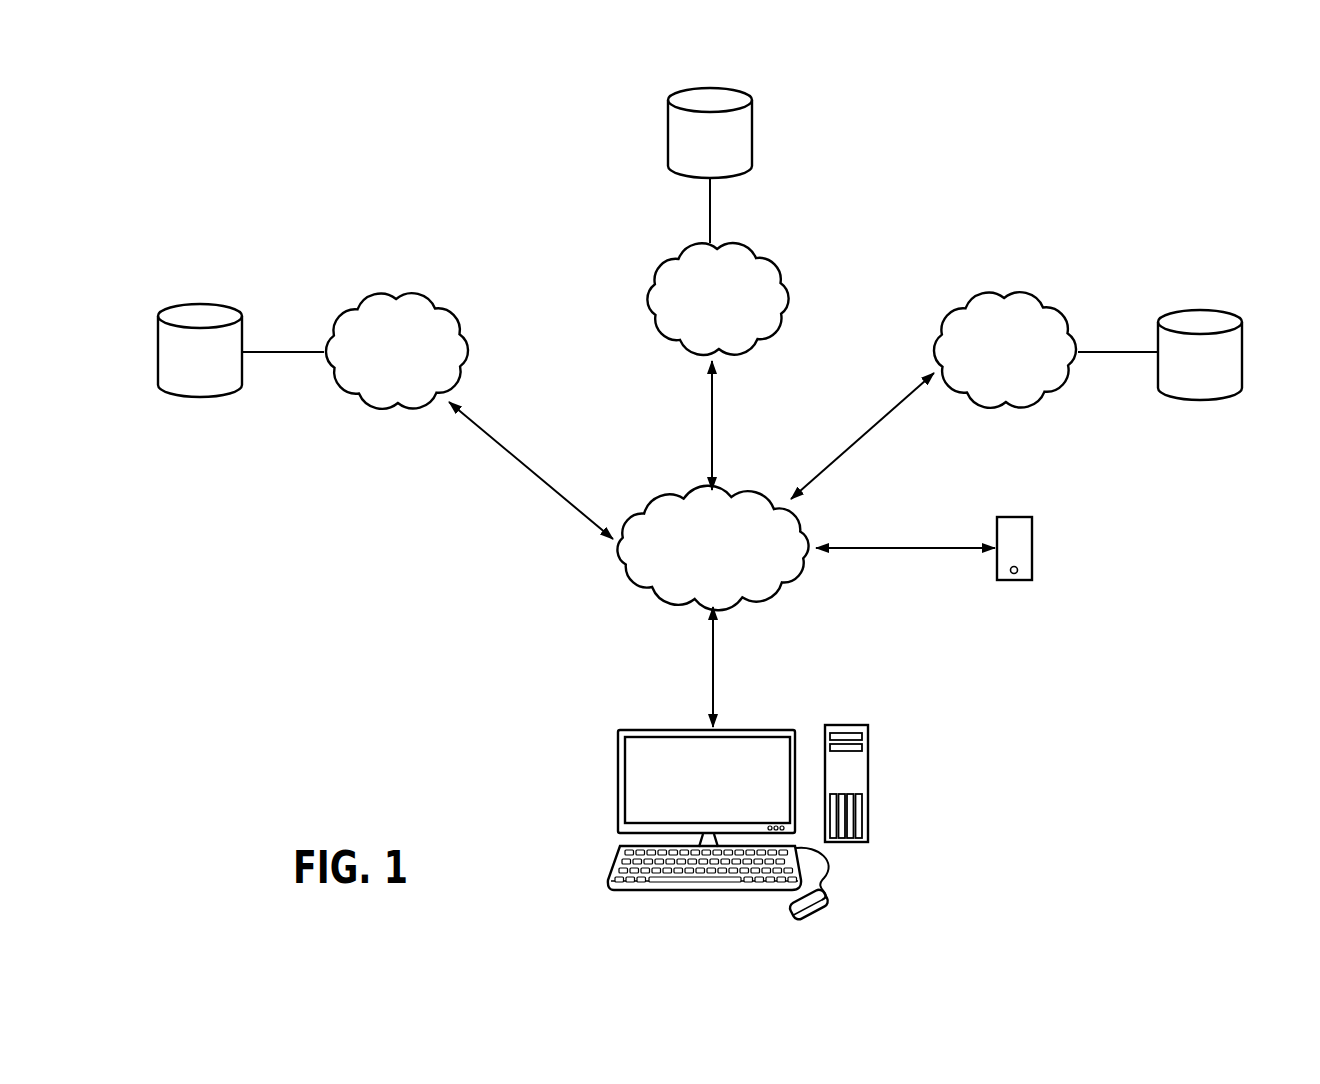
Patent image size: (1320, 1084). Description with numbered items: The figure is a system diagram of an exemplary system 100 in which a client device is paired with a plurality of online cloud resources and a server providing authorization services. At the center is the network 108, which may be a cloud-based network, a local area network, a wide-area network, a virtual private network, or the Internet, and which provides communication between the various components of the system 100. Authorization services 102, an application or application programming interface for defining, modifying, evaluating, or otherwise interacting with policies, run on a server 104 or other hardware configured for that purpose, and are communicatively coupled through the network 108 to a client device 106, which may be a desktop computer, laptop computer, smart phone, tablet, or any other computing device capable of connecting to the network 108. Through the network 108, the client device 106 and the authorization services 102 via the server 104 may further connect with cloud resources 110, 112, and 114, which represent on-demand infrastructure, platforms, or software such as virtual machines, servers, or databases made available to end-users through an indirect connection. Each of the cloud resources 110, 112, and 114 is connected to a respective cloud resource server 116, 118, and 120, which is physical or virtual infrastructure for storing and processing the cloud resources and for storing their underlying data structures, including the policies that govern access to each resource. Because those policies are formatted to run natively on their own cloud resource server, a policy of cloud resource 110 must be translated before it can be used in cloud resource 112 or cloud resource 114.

The system 100 is at (1114, 164).
The authorization services 102 is at (1041, 531).
The server 104 is at (1022, 582).
The client device 106 is at (872, 752).
The network 108 is at (618, 566).
The cloud resource 110 is at (437, 292).
The cloud resource 112 is at (757, 243).
The cloud resource 114 is at (1045, 292).
The cloud resource server 116 is at (213, 305).
The cloud resource server 118 is at (753, 128).
The cloud resource server 120 is at (1204, 310).